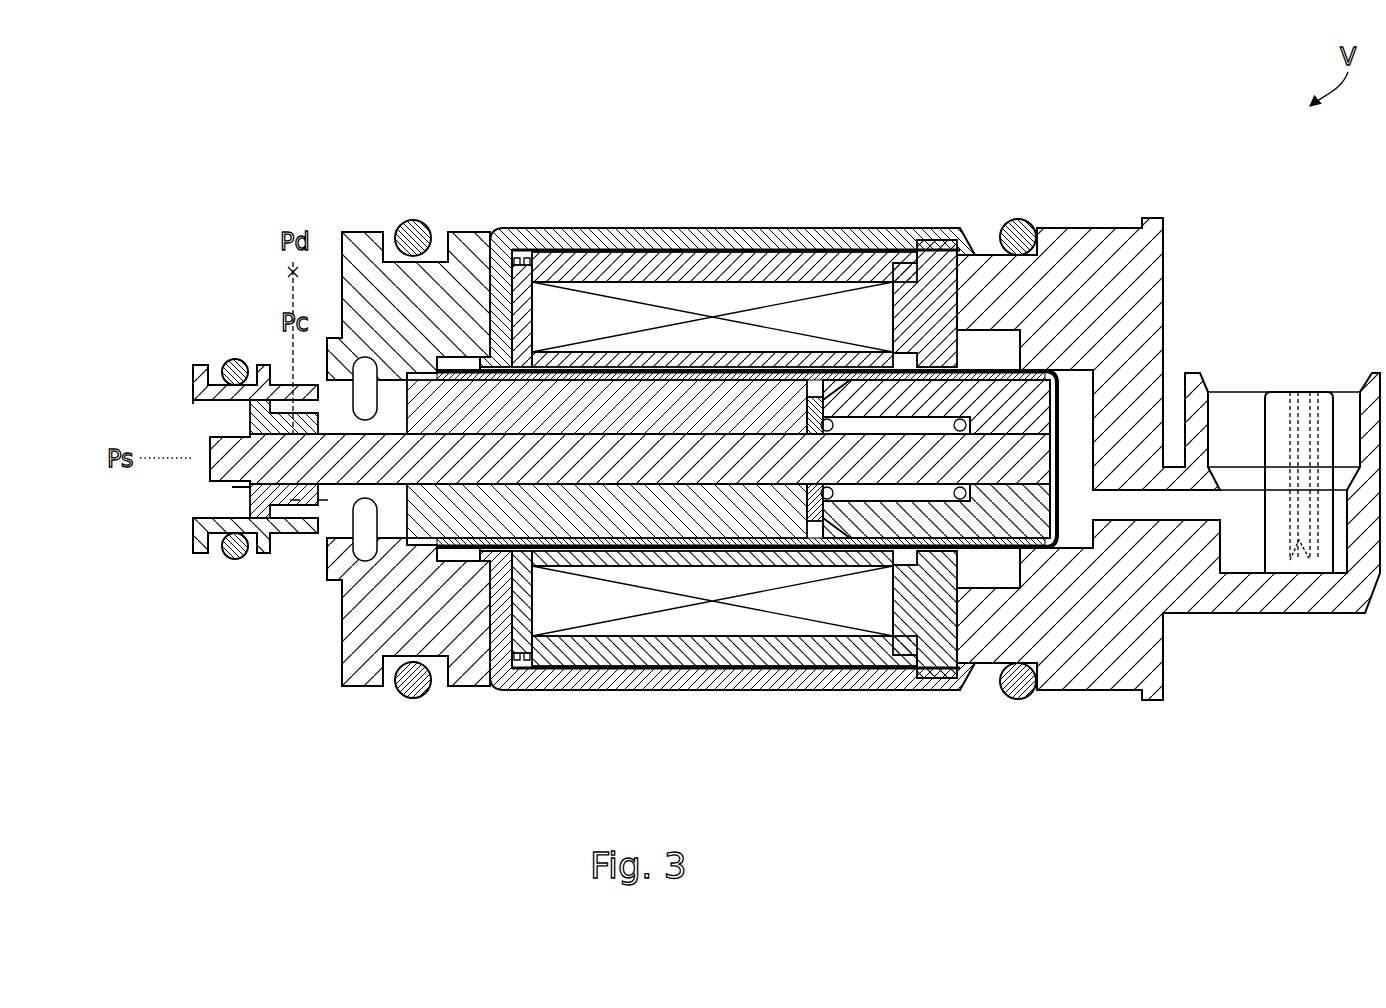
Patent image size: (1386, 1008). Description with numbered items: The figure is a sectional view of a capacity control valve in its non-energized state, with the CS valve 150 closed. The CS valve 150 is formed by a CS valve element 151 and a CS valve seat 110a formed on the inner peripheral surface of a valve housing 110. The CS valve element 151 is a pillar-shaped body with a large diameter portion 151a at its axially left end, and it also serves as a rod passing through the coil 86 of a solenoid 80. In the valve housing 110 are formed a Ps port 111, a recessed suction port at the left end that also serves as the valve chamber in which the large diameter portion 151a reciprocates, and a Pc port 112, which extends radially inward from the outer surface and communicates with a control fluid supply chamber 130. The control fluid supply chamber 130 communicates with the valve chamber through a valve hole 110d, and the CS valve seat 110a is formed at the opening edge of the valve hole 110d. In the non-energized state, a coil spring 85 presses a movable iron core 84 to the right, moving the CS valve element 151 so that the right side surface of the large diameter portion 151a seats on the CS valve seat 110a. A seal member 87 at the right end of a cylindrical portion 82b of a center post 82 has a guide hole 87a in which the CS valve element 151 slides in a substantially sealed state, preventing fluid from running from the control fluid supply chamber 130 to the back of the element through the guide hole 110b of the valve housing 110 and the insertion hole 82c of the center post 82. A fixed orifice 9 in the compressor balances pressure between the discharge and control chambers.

The fixed orifice 9 is at (288, 272).
The solenoid 80 is at (1094, 206).
The center post 82 is at (627, 372).
The cylindrical portion 82b is at (552, 362).
The insertion hole 82c is at (488, 430).
The movable iron core 84 is at (983, 560).
The coil spring 85 is at (847, 548).
The coil 86 is at (667, 600).
The seal member 87 is at (818, 502).
The guide hole 87a is at (806, 522).
The valve housing 110 is at (198, 352).
The CS valve seat 110a is at (240, 488).
The guide hole 110b is at (322, 500).
The valve hole 110d is at (294, 500).
The Ps port 111 is at (193, 398).
The Pc port 112 is at (268, 405).
The control fluid supply chamber 130 is at (300, 428).
The CS valve 150 is at (240, 630).
The CS valve element 151 is at (369, 414).
The large diameter portion 151a is at (236, 562).